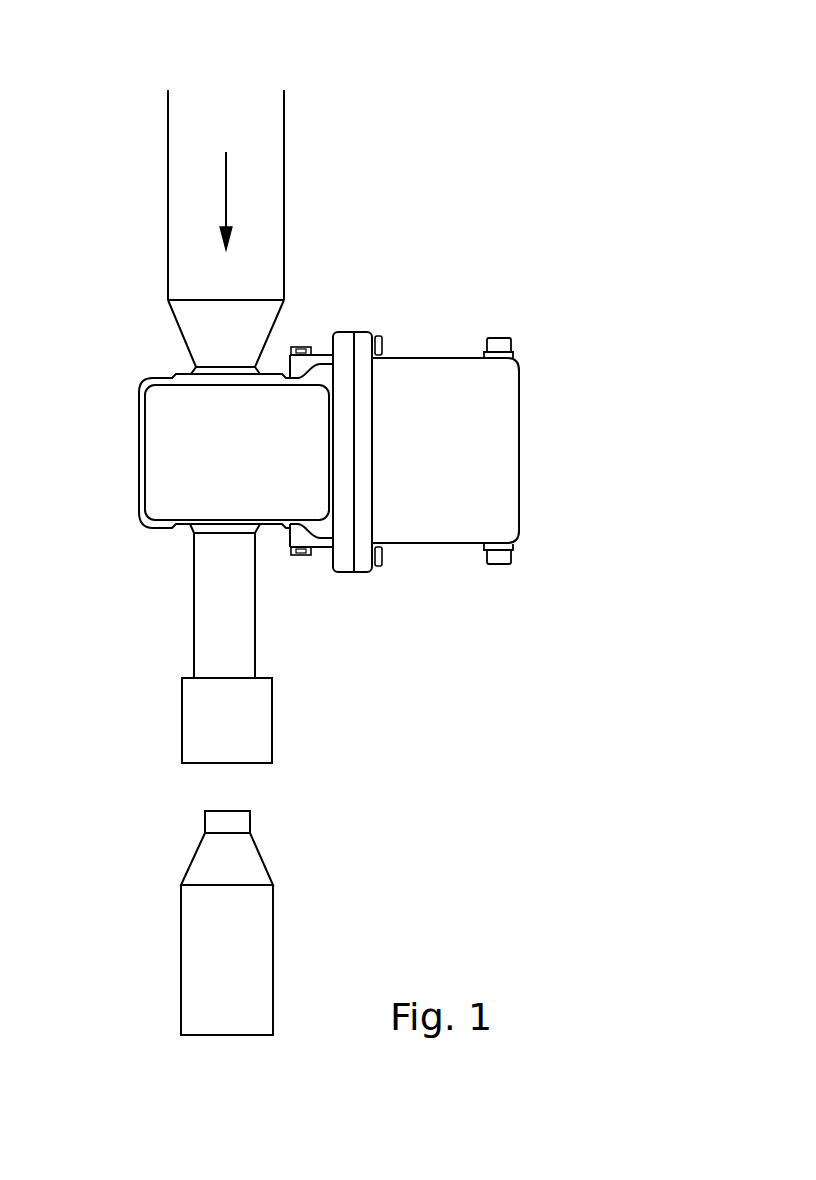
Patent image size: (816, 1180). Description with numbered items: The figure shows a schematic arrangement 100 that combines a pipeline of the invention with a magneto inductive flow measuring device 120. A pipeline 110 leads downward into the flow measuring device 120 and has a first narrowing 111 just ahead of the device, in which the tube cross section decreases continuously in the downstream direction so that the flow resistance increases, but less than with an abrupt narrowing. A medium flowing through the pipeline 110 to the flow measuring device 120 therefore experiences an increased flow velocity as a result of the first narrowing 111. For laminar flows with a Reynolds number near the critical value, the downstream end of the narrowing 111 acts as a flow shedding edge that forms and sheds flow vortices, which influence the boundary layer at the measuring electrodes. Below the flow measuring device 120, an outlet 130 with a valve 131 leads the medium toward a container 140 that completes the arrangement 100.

The arrangement 100 is at (342, 90).
The pipeline 110 is at (192, 185).
The first narrowing 111 is at (197, 338).
The magneto inductive flow measuring device 120 is at (155, 452).
The outlet 130 is at (210, 620).
The valve 131 is at (211, 724).
The container 140 is at (210, 973).